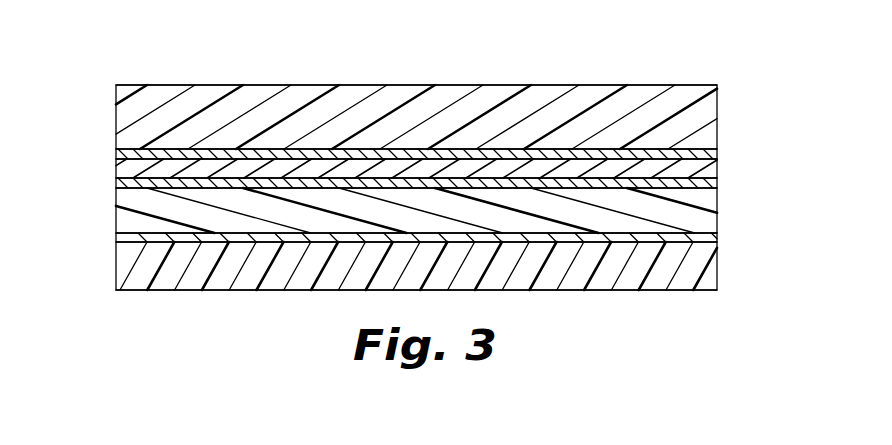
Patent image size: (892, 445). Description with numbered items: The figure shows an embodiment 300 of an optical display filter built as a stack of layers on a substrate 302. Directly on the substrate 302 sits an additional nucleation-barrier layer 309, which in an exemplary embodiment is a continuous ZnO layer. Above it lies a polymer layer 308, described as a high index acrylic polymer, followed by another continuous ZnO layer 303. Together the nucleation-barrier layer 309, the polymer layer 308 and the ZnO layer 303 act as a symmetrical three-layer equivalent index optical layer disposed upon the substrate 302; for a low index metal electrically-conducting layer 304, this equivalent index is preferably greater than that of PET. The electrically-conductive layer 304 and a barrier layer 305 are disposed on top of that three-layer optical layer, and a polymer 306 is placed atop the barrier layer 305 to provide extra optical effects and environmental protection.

The optical filter embodiment 300 is at (688, 56).
The substrate 302 is at (192, 278).
The continuous ZnO layer 303 is at (120, 183).
The electrically-conducting layer 304 is at (120, 167).
The barrier layer 305 is at (120, 152).
The polymer layer 306 is at (163, 97).
The polymer layer 308 is at (120, 220).
The nucleation-barrier layer 309 is at (120, 240).